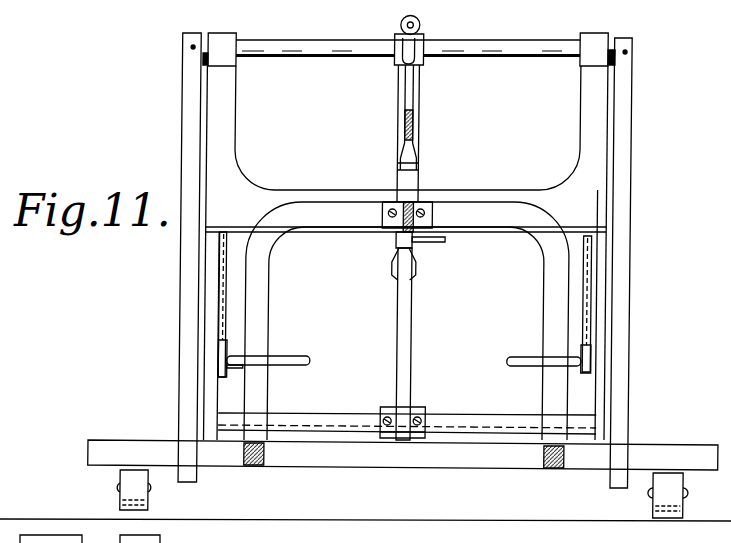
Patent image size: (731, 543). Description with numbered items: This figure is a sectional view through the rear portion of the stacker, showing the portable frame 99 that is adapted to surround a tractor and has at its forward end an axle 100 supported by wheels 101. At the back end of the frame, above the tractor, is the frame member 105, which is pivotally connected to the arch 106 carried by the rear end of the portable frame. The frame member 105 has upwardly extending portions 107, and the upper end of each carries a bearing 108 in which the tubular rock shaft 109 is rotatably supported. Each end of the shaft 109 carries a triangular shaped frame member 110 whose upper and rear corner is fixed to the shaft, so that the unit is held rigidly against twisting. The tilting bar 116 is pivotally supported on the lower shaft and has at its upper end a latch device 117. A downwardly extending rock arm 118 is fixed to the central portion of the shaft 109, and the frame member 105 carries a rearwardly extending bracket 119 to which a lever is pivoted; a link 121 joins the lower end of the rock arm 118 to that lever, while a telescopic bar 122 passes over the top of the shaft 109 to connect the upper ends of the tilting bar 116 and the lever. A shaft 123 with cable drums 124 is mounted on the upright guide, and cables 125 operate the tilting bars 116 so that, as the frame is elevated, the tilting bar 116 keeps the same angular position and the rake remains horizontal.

The portable frame 99 is at (304, 456).
The axle 100 is at (109, 447).
The wheels 101 is at (150, 503).
The frame member 105 is at (231, 162).
The arch 106 is at (549, 280).
The upwardly extending portions 107 is at (233, 108).
The bearing 108 is at (227, 43).
The tubular rock shaft 109 is at (350, 47).
The triangular shaped frame member 110 is at (186, 128).
The tilting bar 116 is at (413, 330).
The latch device 117 is at (428, 241).
The rock arm 118 is at (408, 108).
The bracket 119 is at (413, 211).
The link 121 is at (414, 134).
The telescopic bar 122 is at (420, 25).
The shaft 123 is at (299, 357).
The cable drums 124 is at (238, 356).
The cables 125 is at (589, 285).